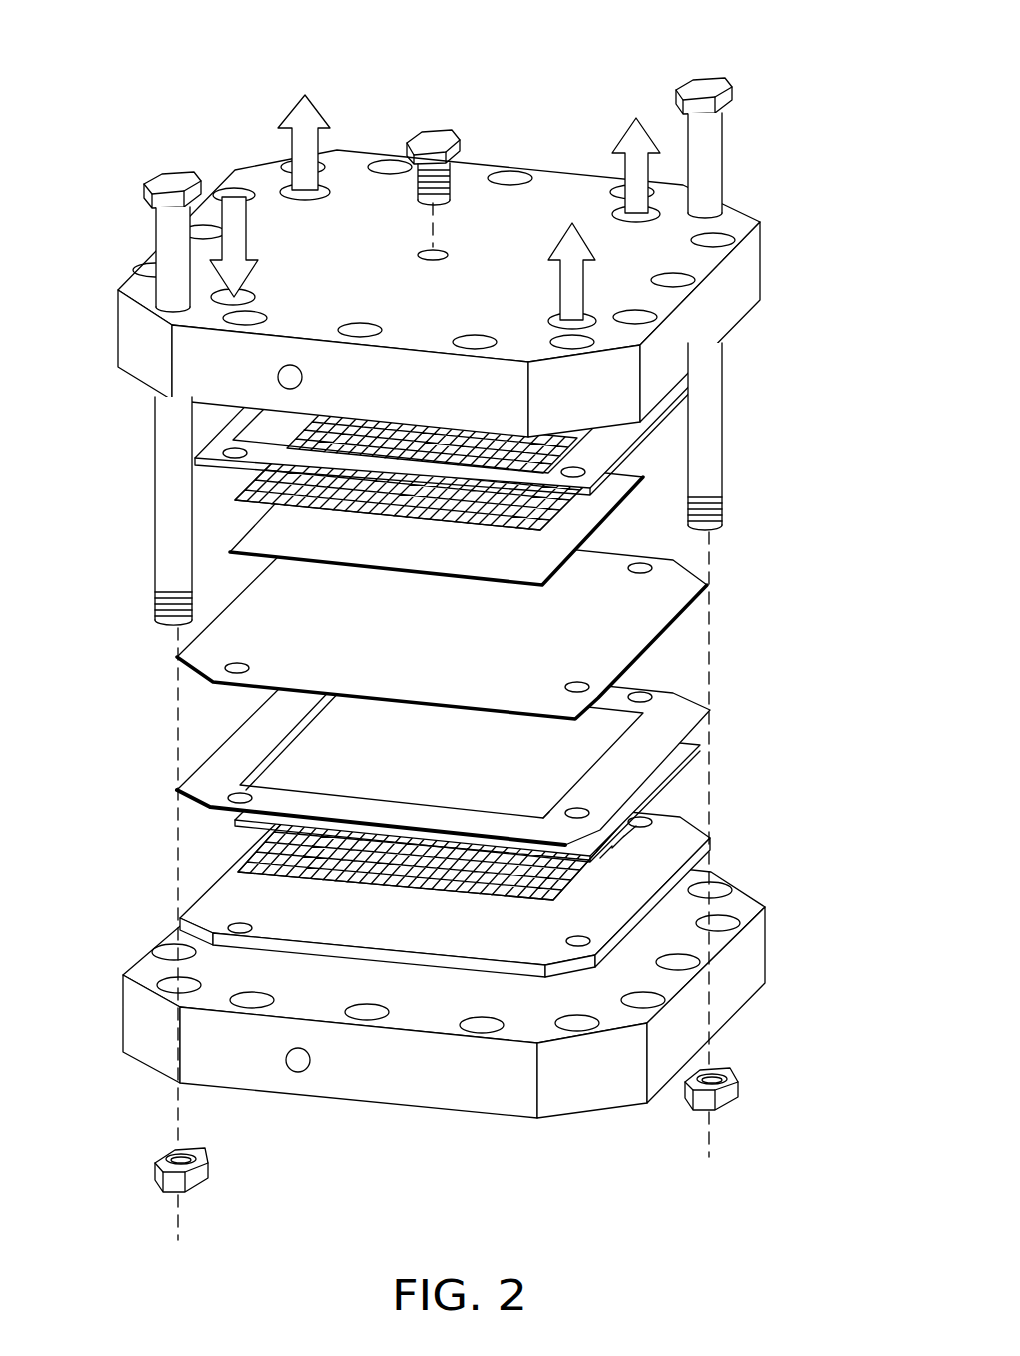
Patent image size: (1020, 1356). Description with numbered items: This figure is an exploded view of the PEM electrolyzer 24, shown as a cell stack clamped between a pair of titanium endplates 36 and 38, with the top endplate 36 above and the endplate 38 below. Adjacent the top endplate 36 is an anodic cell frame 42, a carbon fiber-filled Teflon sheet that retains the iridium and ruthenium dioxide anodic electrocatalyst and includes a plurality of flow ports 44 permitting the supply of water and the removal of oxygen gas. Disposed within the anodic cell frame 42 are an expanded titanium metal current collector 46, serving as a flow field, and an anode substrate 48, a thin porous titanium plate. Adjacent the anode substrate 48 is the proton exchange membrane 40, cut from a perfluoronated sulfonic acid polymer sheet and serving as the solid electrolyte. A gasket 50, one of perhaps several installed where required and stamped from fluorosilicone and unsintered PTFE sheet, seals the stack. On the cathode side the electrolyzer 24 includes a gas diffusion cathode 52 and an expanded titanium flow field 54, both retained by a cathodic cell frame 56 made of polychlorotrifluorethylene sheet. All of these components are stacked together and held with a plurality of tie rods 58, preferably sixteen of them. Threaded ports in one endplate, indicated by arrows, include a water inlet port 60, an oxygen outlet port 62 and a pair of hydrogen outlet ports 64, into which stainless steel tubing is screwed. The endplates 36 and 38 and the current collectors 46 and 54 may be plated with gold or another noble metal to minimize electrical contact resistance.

The PEM electrolyzer 24 is at (126, 80).
The top endplate 36 is at (117, 322).
The endplate 38 is at (122, 1014).
The proton exchange membrane 40 is at (707, 586).
The anodic cell frame 42 is at (216, 483).
The flow ports 44 is at (226, 452).
The expanded titanium metal current collector 46 is at (235, 500).
The anode substrate 48 is at (603, 517).
The gasket 50 is at (182, 788).
The gas diffusion cathode 52 is at (235, 826).
The expanded titanium flow field 54 is at (238, 875).
The cathodic cell frame 56 is at (712, 842).
The tie rods 58 is at (148, 182).
The water inlet port 60 is at (248, 228).
The oxygen outlet port 62 is at (622, 128).
The hydrogen outlet ports 64 is at (322, 112).